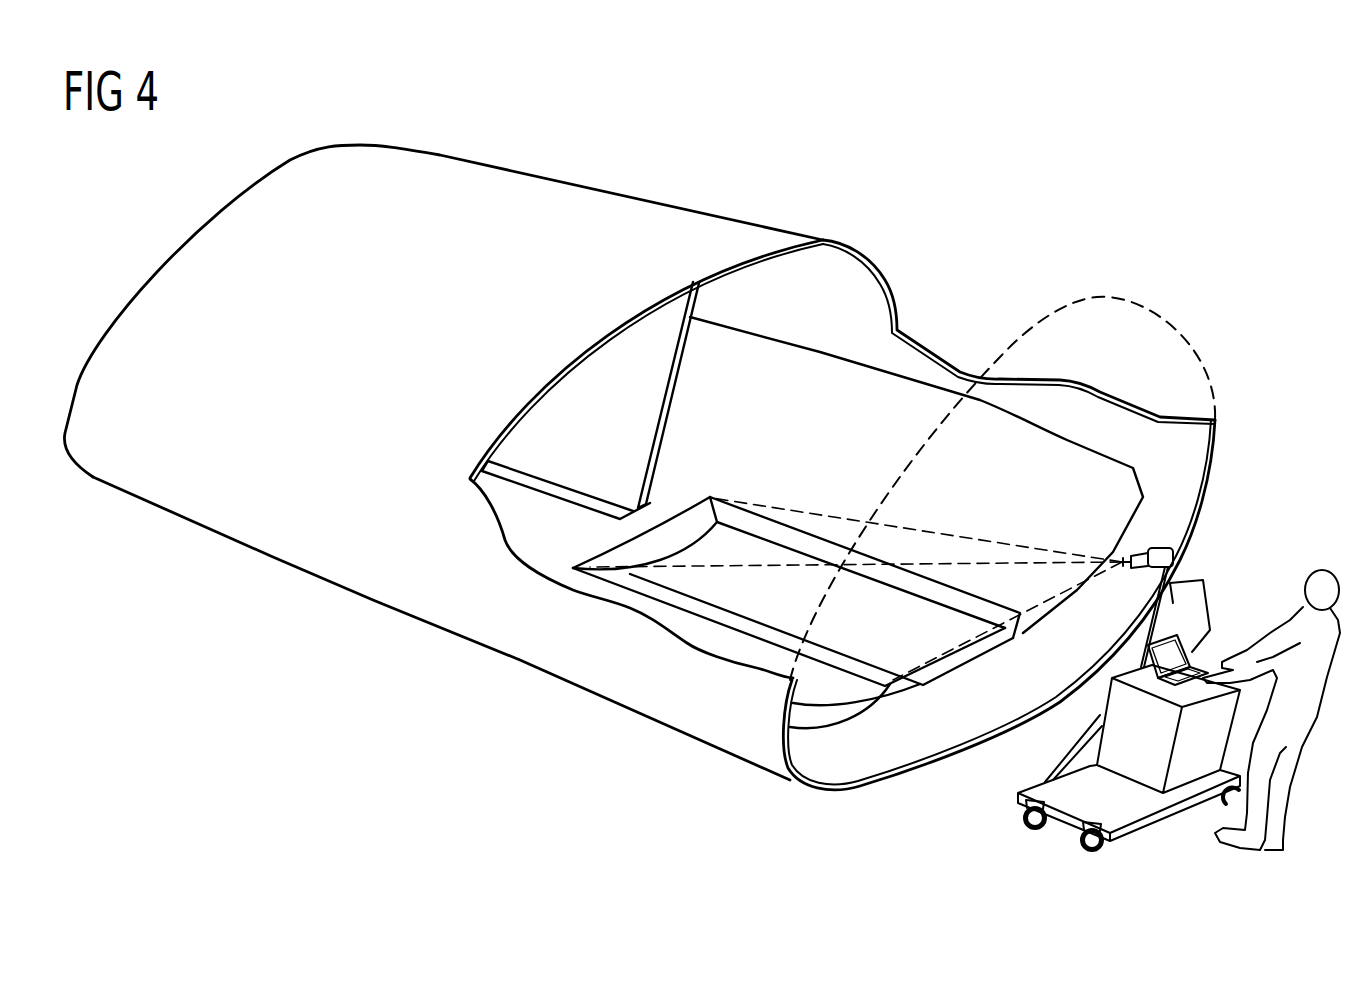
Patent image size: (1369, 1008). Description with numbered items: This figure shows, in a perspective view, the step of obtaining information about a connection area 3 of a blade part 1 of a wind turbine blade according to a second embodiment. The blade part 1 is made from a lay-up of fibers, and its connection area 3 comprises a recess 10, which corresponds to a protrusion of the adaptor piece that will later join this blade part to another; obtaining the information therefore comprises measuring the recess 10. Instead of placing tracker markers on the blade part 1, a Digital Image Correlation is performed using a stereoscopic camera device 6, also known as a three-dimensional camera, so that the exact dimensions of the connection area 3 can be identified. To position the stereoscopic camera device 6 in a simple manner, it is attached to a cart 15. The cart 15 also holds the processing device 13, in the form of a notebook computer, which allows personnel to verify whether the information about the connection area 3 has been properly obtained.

The blade part 1 is at (905, 410).
The connection area 3 is at (493, 679).
The stereoscopic camera device 6 is at (1163, 547).
The recess 10 is at (909, 626).
The processing device 13 is at (1158, 650).
The cart 15 is at (1135, 808).